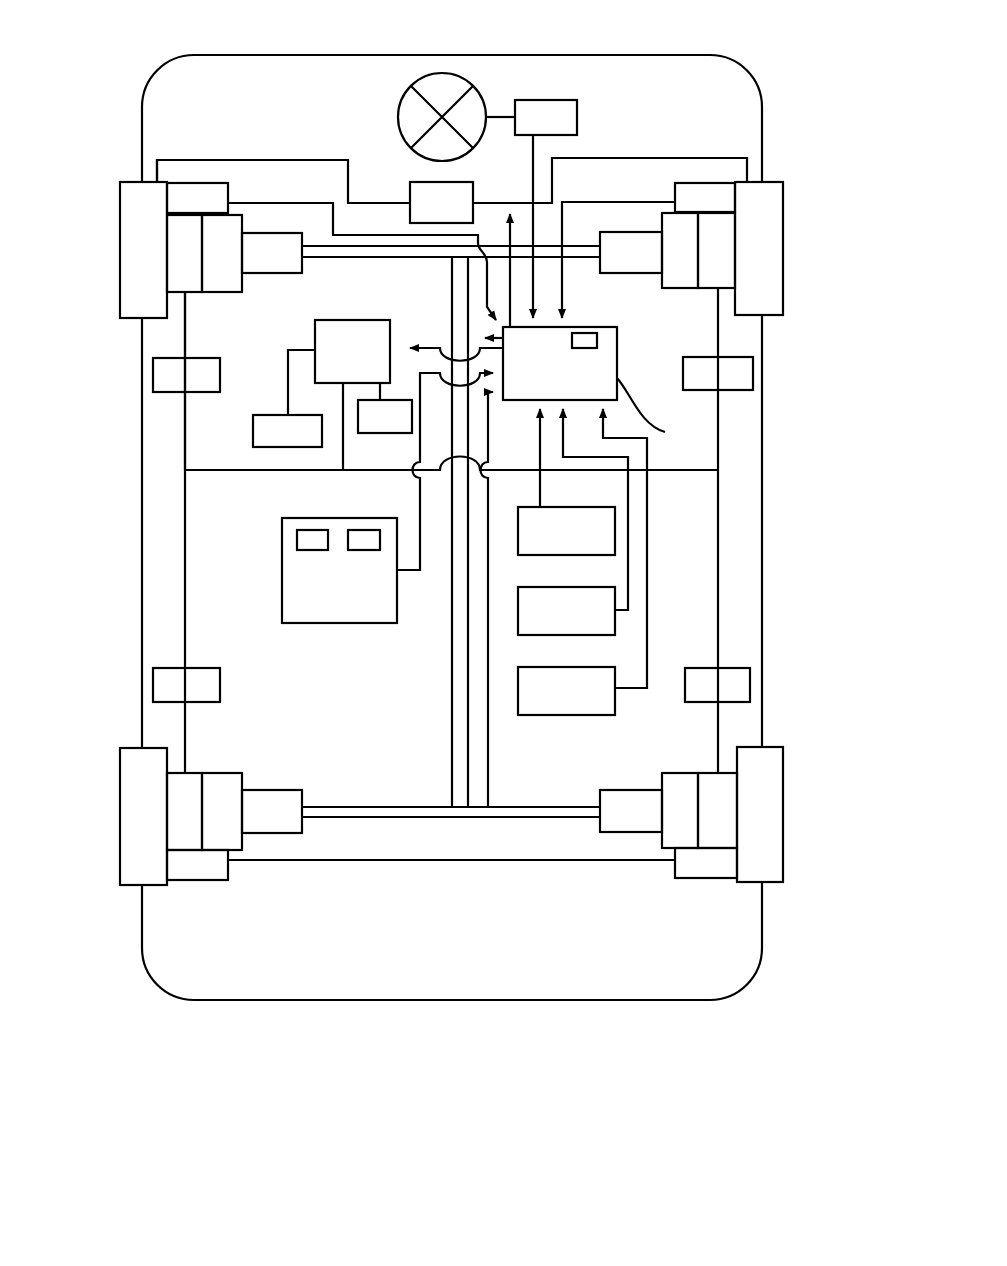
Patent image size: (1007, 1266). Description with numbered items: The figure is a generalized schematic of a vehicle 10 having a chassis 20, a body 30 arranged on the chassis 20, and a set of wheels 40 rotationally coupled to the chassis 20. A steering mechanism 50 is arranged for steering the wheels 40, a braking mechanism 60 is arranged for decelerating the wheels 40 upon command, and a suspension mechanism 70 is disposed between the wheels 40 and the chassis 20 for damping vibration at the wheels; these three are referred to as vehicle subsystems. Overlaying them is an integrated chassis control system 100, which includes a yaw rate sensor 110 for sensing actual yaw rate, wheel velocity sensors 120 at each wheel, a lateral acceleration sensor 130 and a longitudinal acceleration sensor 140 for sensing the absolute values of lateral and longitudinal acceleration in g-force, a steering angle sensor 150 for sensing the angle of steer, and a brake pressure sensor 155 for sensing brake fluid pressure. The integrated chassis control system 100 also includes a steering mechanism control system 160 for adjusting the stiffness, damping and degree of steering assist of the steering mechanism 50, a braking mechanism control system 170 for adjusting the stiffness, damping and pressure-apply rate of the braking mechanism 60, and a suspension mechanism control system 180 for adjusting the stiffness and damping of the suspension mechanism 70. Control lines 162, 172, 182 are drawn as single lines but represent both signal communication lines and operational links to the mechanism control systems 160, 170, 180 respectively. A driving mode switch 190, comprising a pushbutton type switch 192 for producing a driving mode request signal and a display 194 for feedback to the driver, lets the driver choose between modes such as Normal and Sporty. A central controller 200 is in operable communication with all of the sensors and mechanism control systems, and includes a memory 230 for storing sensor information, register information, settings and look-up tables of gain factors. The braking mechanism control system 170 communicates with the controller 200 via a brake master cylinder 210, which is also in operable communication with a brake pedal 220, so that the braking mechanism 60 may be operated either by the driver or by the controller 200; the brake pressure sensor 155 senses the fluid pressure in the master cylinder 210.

The vehicle 10 is at (185, 1063).
The chassis 20 is at (452, 680).
The body 30 is at (143, 948).
The wheels 40 is at (783, 207).
The steering mechanism 50 is at (430, 73).
The braking mechanism 60 is at (195, 773).
The suspension mechanism 70 is at (660, 835).
The integrated chassis control system 100 is at (660, 357).
The yaw rate sensor 110 is at (577, 507).
The wheel velocity sensors 120 is at (690, 183).
The lateral acceleration sensor 130 is at (595, 635).
The longitudinal acceleration sensor 140 is at (590, 715).
The steering angle sensor 150 is at (565, 100).
The brake pressure sensor 155 is at (387, 433).
The steering mechanism control system 160 is at (440, 182).
The control line 162 is at (215, 160).
The braking mechanism control system 170 is at (170, 392).
The control line 172 is at (185, 342).
The suspension mechanism control system 180 is at (280, 273).
The control line 182 is at (340, 258).
The driving mode switch 190 is at (282, 600).
The pushbutton type switch 192 is at (297, 540).
The display 194 is at (358, 530).
The central controller 200 is at (666, 412).
The brake master cylinder 210 is at (315, 333).
The brake pedal 220 is at (253, 432).
The memory 230 is at (597, 340).